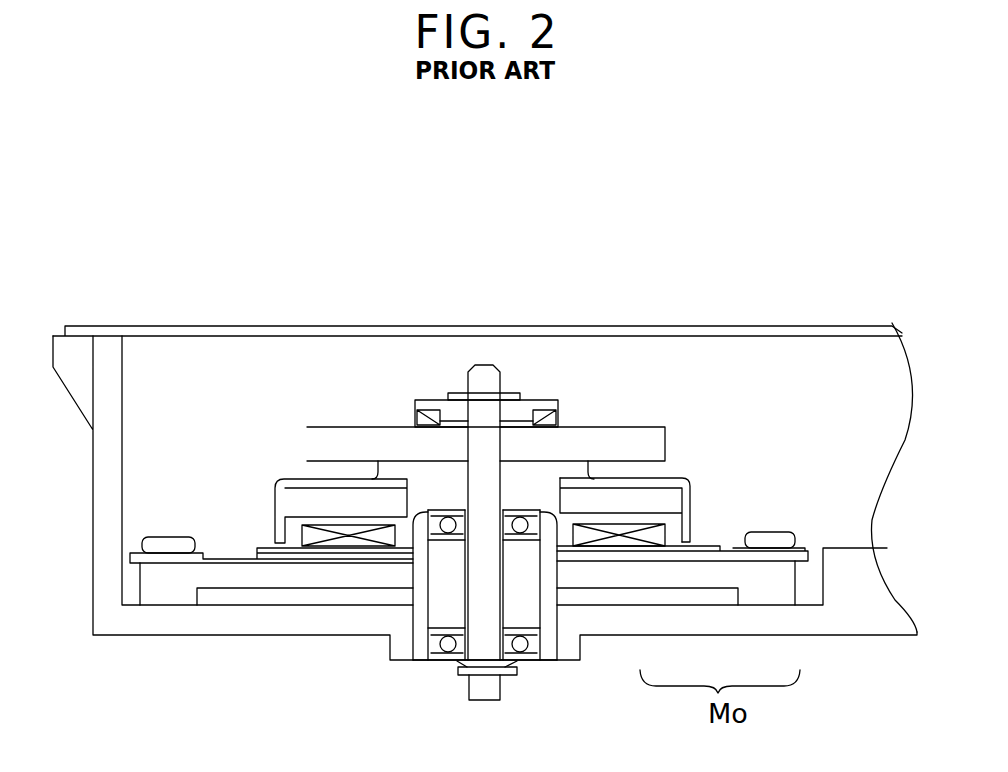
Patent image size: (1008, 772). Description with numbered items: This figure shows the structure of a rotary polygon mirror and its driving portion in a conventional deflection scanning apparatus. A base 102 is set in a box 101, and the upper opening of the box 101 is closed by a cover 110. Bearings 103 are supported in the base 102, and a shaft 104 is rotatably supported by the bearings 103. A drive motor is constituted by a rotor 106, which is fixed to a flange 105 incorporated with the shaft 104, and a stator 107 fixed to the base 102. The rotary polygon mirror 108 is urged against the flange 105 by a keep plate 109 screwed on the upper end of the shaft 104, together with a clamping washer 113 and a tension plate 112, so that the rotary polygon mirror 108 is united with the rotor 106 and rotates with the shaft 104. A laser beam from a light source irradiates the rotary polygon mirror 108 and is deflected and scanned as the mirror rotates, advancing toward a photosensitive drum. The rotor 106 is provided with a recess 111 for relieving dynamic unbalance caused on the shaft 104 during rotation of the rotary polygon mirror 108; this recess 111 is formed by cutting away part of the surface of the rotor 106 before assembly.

The box 101 is at (257, 622).
The base 102 is at (162, 590).
The bearings 103 is at (438, 655).
The shaft 104 is at (490, 598).
The flange 105 is at (402, 470).
The rotor 106 is at (667, 500).
The stator 107 is at (623, 542).
The rotary polygon mirror 108 is at (655, 435).
The keep plate 109 is at (522, 407).
The cover 110 is at (262, 332).
The recess 111 is at (657, 481).
The tension plate 112 is at (559, 413).
The clamping washer 113 is at (510, 400).